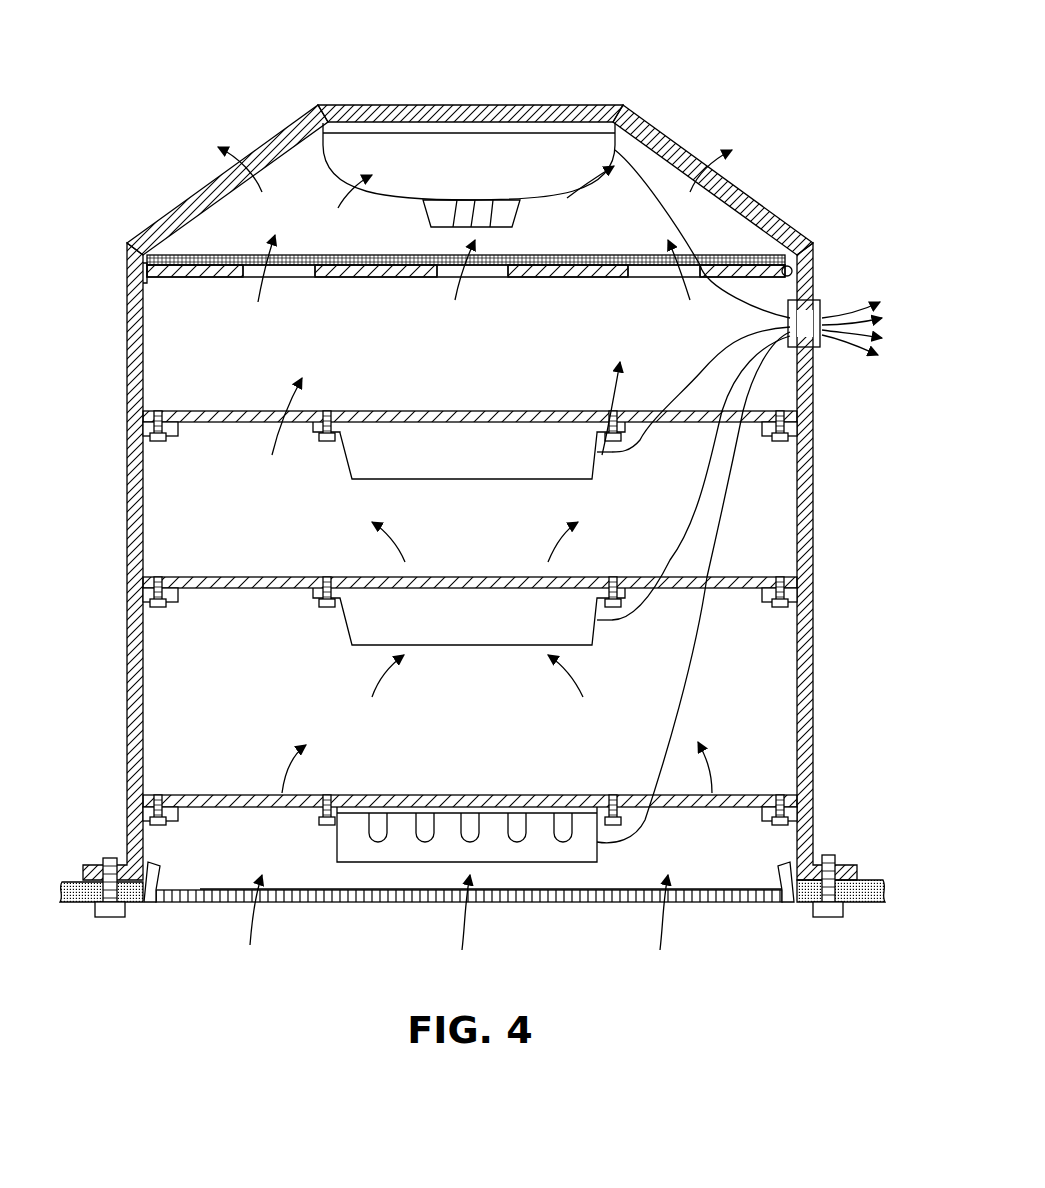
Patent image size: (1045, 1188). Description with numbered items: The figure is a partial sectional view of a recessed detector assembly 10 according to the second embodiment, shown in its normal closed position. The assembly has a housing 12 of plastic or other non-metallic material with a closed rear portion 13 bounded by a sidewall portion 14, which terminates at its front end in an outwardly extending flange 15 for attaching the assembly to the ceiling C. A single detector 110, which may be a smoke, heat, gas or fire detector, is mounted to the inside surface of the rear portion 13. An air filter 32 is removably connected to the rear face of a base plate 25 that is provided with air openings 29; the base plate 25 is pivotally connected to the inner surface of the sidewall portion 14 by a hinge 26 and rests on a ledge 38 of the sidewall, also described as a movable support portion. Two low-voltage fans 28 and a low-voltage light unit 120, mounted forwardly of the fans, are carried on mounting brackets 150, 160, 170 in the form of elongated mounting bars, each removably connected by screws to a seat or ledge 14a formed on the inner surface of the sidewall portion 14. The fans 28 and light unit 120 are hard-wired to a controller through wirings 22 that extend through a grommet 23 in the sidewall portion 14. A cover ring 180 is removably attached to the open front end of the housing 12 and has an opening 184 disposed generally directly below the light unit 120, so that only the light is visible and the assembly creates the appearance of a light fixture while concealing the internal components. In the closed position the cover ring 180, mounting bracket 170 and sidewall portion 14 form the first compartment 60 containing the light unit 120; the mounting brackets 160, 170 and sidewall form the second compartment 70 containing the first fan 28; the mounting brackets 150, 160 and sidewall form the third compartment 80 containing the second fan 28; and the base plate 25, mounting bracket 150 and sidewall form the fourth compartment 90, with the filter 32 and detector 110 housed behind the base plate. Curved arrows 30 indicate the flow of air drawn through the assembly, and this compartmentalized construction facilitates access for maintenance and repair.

The detector assembly 10 is at (552, 72).
The housing 12 is at (127, 243).
The rear portion 13 is at (400, 105).
The sidewall portion 14 is at (127, 520).
The ledge 14a is at (170, 440).
The flange 15 is at (100, 862).
The wirings 22 is at (748, 335).
The grommet 23 is at (820, 347).
The base plate 25 is at (387, 278).
The hinge 26 is at (797, 272).
The low-voltage fan 28 is at (455, 461).
The air openings 29 is at (297, 278).
The roof vent airflow 30 is at (252, 165).
The air filter 32 is at (540, 258).
The ledge 38 is at (147, 280).
The first compartment 60 is at (268, 863).
The second compartment 70 is at (417, 730).
The third compartment 80 is at (455, 541).
The fourth compartment 90 is at (450, 371).
The detector 110 is at (455, 178).
The low-voltage light unit 120 is at (598, 842).
The mounting bracket 150 is at (242, 411).
The mounting bracket 160 is at (242, 577).
The mounting bracket 170 is at (242, 795).
The cover ring 180 is at (205, 903).
The opening 184 is at (352, 907).
The ceiling C is at (858, 882).